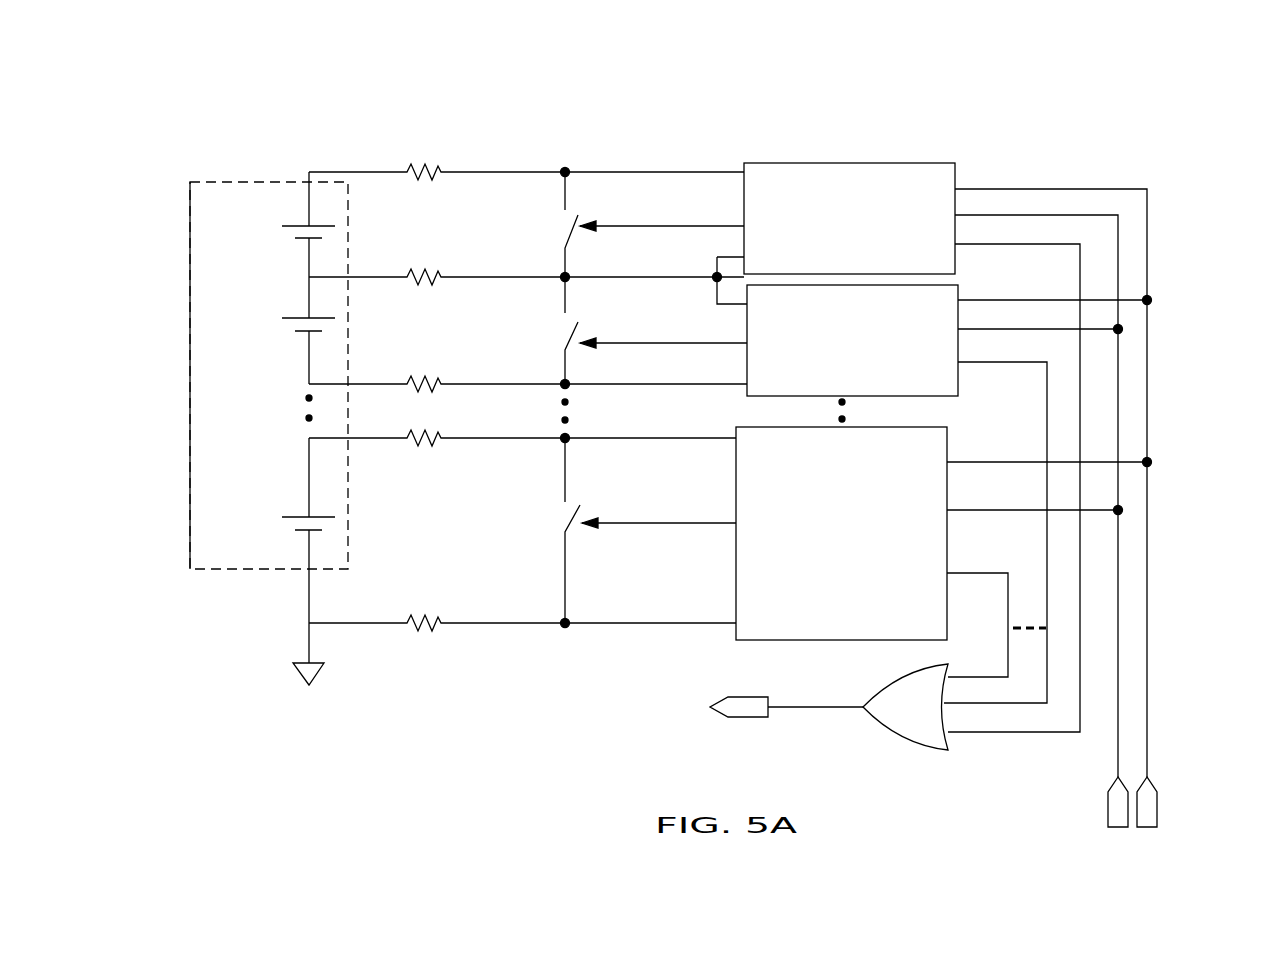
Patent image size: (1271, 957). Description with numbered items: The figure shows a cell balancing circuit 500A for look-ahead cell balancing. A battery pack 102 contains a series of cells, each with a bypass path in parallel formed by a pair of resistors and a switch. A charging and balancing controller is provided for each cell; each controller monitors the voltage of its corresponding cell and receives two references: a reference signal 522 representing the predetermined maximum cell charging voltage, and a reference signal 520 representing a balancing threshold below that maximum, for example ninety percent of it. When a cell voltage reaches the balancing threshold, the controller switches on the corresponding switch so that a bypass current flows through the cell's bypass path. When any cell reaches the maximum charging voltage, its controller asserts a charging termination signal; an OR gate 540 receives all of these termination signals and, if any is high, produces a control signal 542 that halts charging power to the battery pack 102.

The cell balancing circuit 500A is at (215, 116).
The battery pack 102 is at (258, 182).
The OR gate 540 is at (905, 707).
The control signal 542 is at (812, 703).
The reference signal 520 is at (1147, 713).
The reference signal 522 is at (1118, 765).